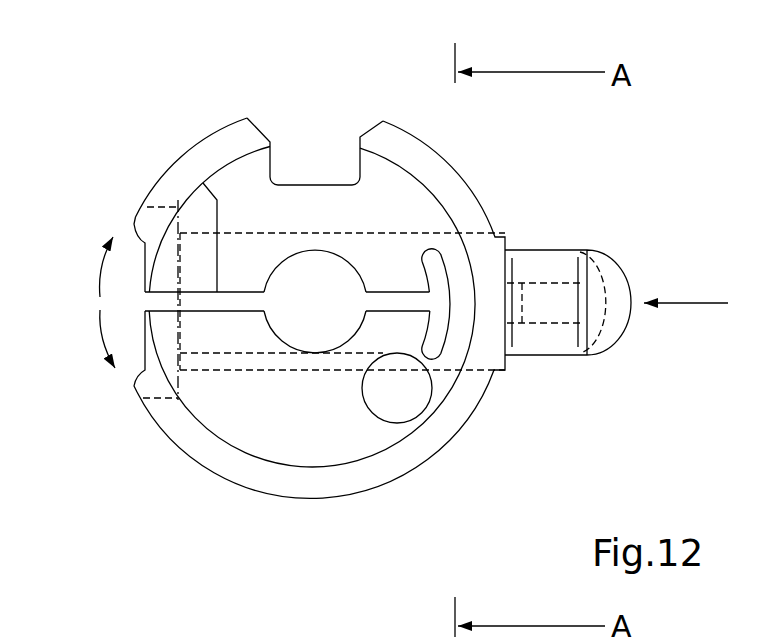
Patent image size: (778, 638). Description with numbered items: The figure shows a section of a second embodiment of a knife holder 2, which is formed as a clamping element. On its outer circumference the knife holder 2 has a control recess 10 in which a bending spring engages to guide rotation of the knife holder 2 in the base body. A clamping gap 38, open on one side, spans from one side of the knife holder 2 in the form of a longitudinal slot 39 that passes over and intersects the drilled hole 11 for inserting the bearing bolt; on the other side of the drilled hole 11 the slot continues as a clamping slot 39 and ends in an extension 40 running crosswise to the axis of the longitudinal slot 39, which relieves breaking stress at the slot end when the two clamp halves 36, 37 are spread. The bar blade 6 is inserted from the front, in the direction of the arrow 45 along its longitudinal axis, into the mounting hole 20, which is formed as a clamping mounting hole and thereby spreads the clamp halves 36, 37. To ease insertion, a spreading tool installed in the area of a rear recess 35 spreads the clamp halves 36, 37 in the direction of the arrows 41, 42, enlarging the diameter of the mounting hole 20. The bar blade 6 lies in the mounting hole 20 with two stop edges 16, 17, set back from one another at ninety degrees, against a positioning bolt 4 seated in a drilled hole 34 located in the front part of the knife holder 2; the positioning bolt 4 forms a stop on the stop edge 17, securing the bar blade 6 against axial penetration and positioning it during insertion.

The knife holder 2 is at (455, 178).
The positioning bolt 4 is at (459, 412).
The drilled hole 34 is at (422, 393).
The bar blade 6 is at (553, 260).
The control recess 10 is at (275, 150).
The drilled hole 11 is at (305, 352).
The stop edge 16 is at (253, 352).
The stop edge 17 is at (459, 451).
The mounting hole 20 is at (483, 233).
The rear recess 35 is at (153, 230).
The clamp half 36 is at (223, 145).
The clamp half 37 is at (182, 427).
The clamping gap 38 is at (217, 240).
The longitudinal slot 39 is at (392, 292).
The extension 40 is at (435, 338).
The arrow 41 is at (105, 263).
The arrow 42 is at (100, 333).
The arrow 45 is at (693, 302).